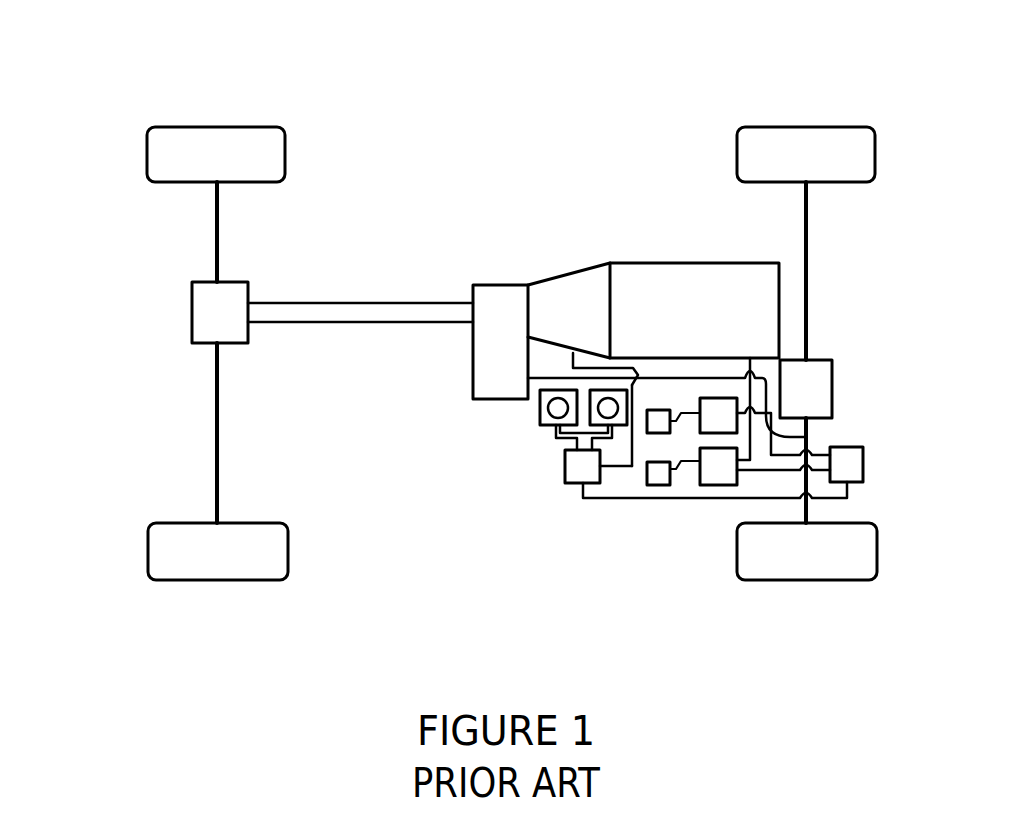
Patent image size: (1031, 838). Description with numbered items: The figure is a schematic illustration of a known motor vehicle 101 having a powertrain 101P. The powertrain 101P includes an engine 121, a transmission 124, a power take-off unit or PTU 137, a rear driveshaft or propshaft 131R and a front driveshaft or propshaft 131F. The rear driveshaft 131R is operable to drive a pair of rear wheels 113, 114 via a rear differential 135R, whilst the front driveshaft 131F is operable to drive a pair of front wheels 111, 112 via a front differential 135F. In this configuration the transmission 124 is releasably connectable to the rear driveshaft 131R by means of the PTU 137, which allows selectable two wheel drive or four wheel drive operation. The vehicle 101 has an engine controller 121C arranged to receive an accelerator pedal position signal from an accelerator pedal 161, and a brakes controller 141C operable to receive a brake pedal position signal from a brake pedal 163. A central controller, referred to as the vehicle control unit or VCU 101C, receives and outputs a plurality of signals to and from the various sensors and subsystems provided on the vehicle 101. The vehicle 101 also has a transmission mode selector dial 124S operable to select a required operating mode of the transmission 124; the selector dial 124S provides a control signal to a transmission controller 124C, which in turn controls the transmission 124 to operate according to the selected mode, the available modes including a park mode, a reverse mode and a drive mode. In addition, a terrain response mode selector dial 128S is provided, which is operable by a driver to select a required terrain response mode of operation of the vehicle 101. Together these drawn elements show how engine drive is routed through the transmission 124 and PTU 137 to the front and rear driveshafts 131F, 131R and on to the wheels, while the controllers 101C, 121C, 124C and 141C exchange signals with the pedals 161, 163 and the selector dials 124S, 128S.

The motor vehicle 101 is at (776, 75).
The powertrain 101P is at (688, 147).
The vehicle control unit 101C is at (848, 463).
The front wheel 111 is at (857, 127).
The front wheel 112 is at (855, 581).
The rear wheel 113 is at (173, 126).
The rear wheel 114 is at (180, 580).
The engine 121 is at (698, 278).
The engine controller 121C is at (719, 473).
The transmission 124 is at (593, 287).
The transmission mode selector dial 124S is at (538, 412).
The transmission controller 124C is at (583, 467).
The terrain response mode selector dial 128S is at (604, 400).
The rear driveshaft 131R is at (352, 311).
The front driveshaft 131F is at (803, 440).
The rear differential 135R is at (217, 320).
The front differential 135F is at (820, 390).
The power take-off unit 137 is at (495, 303).
The brakes controller 141C is at (719, 406).
The accelerator pedal 161 is at (658, 473).
The brake pedal 163 is at (658, 422).